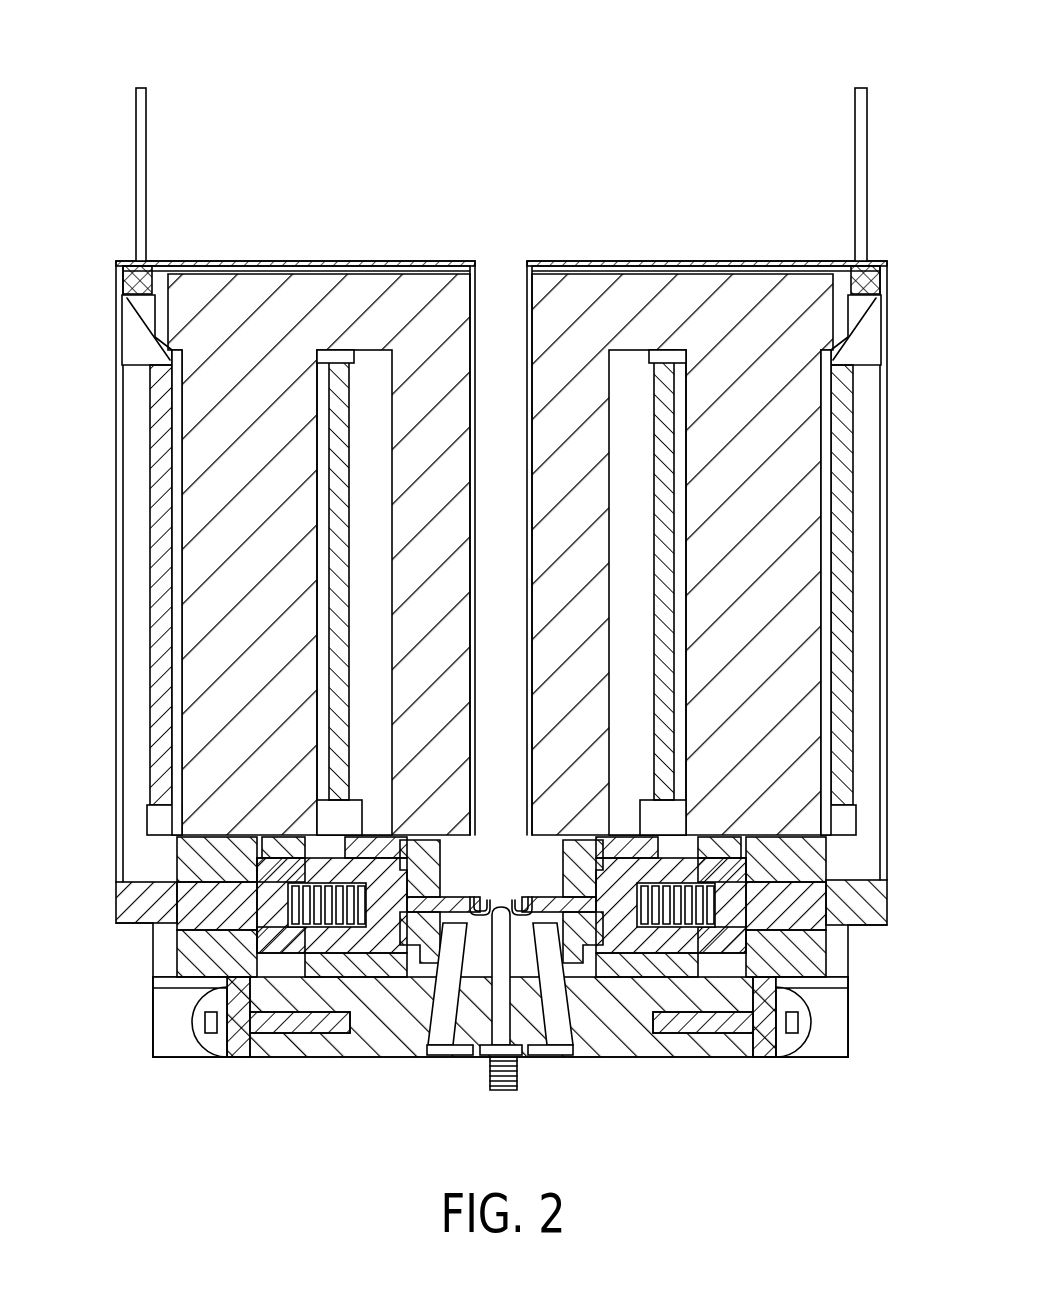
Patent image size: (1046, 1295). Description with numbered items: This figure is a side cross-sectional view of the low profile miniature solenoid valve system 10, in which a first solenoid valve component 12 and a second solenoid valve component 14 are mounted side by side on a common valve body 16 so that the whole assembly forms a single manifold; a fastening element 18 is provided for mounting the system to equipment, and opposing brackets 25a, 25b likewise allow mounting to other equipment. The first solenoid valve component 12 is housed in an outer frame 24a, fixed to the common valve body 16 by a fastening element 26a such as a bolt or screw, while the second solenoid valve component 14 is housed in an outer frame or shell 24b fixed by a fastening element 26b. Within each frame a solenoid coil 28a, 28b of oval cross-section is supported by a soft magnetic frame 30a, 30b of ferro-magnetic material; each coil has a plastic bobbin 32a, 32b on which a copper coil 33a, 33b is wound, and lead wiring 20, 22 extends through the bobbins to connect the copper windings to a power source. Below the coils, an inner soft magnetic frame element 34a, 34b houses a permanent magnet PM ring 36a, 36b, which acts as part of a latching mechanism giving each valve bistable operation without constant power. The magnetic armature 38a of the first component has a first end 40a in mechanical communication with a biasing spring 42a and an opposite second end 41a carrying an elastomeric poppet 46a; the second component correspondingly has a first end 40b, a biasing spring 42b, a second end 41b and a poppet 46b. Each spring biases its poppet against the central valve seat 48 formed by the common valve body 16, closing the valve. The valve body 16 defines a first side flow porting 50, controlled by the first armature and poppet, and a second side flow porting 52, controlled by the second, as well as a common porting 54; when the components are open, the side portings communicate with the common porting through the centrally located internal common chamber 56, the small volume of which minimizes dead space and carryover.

The low profile miniature solenoid valve system 10 is at (492, 557).
The first solenoid valve component 12 is at (100, 398).
The second solenoid valve component 14 is at (895, 275).
The common valve body 16 is at (388, 1050).
The fastening element 18 is at (503, 1093).
The lead wiring 20 is at (140, 88).
The lead wiring 22 is at (860, 88).
The outer frame 24a is at (135, 574).
The outer frame or shell 24b is at (875, 414).
The bracket 25a is at (168, 1050).
The mounting bracket 25b is at (842, 1024).
The fastening element 26a is at (205, 1000).
The fastening element 26b is at (790, 1040).
The solenoid coil 28a is at (338, 352).
The solenoid coil 28b is at (665, 352).
The soft magnetic frame 30a is at (195, 672).
The soft magnetic frame 30b is at (752, 290).
The plastic bobbin 32a is at (135, 316).
The plastic bobbin 32b is at (870, 313).
The copper coil 33a is at (160, 470).
The copper coil 33b is at (843, 478).
The inner soft magnetic frame element 34a is at (215, 872).
The inner soft magnetic frame element 34b is at (810, 946).
The PM ring 36a is at (268, 980).
The PM ring 36b is at (760, 863).
The magnetic armature 38a is at (420, 870).
The first end 40a is at (265, 898).
The first end 40b is at (690, 940).
The second end 41a is at (352, 1036).
The second end 41b is at (641, 1036).
The biasing spring 42a is at (300, 905).
The biasing spring 42b is at (665, 880).
The poppet 46a is at (462, 898).
The poppet 46b is at (536, 898).
The central valve seat 48 is at (510, 1000).
The first side flow porting 50 is at (450, 1030).
The second side flow porting 52 is at (555, 1040).
The common porting 54 is at (515, 1048).
The internal common chamber 56 is at (490, 896).